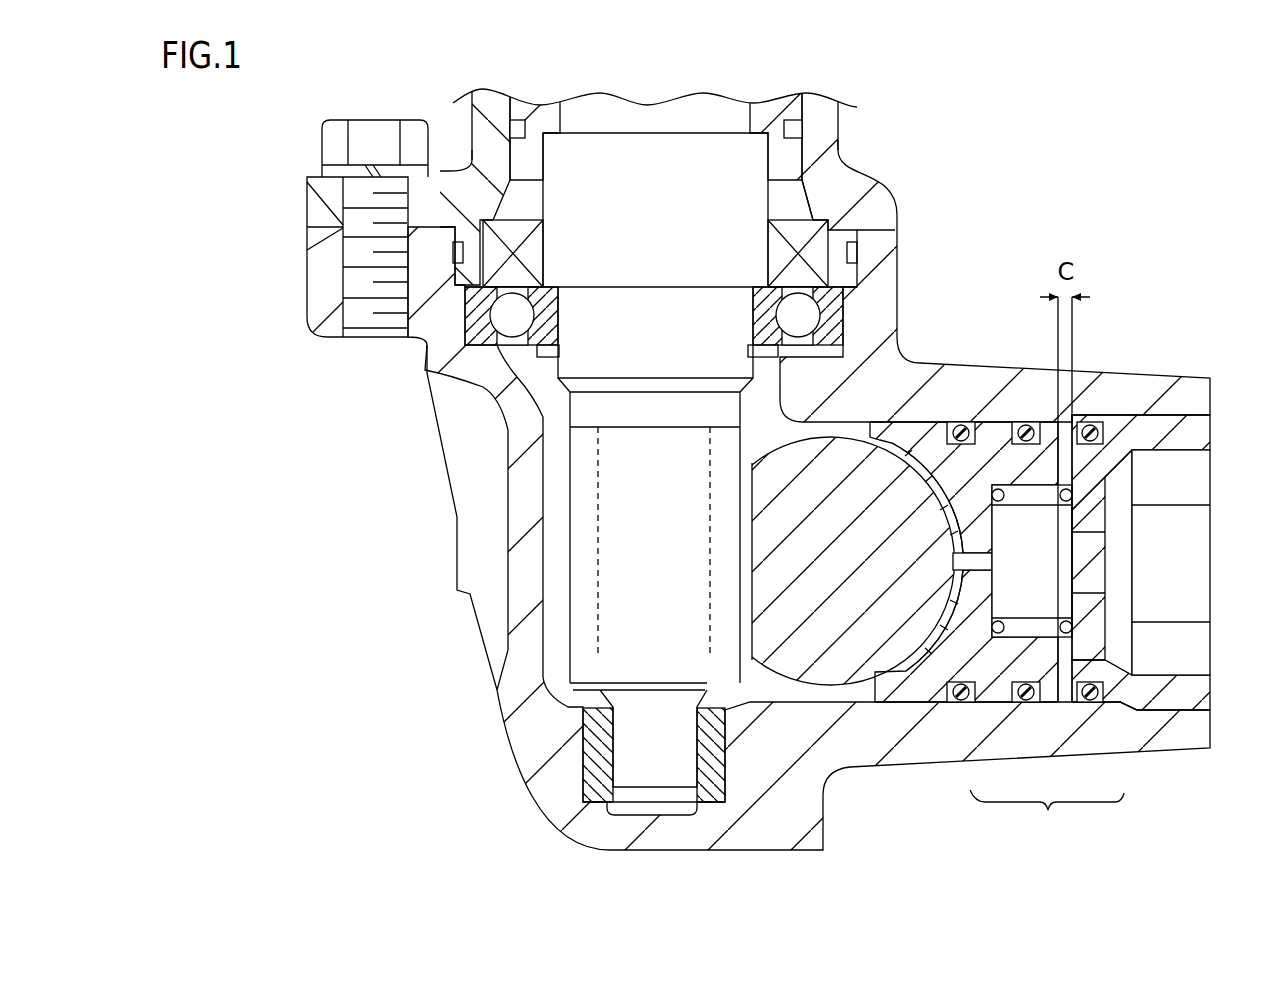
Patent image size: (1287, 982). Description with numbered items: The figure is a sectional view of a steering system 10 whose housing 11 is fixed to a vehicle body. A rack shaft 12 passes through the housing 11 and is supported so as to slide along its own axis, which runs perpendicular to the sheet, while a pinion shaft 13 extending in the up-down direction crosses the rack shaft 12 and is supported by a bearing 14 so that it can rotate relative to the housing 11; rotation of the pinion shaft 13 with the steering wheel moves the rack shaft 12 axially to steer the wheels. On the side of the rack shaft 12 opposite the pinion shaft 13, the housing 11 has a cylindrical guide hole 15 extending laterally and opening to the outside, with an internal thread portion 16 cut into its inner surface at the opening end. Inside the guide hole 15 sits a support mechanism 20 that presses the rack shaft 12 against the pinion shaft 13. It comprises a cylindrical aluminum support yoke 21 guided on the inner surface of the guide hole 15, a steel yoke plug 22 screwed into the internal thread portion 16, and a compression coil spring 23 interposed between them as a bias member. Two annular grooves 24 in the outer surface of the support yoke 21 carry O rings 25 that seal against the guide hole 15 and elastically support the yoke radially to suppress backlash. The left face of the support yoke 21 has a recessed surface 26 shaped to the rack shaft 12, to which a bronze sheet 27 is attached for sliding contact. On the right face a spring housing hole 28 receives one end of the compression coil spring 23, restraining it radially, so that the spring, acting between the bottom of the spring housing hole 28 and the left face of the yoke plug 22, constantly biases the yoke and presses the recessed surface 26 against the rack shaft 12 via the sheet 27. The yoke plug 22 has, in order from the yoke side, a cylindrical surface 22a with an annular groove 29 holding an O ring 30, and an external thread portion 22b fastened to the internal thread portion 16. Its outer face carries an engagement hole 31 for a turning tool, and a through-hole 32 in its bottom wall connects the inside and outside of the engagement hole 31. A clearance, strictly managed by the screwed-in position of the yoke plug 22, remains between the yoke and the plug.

The steering system 10 is at (1046, 184).
The housing 11 is at (808, 810).
The rack shaft 12 is at (815, 680).
The pinion shaft 13 is at (570, 645).
The bearing 14 is at (465, 345).
The guide hole 15 is at (930, 690).
The internal thread portion 16 is at (1187, 705).
The support mechanism 20 is at (1047, 819).
The support yoke 21 is at (993, 703).
The yoke plug 22 is at (1110, 703).
The cylindrical surface 22a is at (1120, 420).
The external thread portion 22b is at (1187, 415).
The compression coil spring 23 is at (1049, 703).
The annular groove 24 is at (1021, 420).
The O ring 25 is at (962, 420).
The recessed surface 26 is at (884, 430).
The sheet 27 is at (870, 662).
The spring housing hole 28 is at (1020, 572).
The annular groove 29 is at (1094, 420).
The O ring 30 is at (1070, 420).
The engagement hole 31 is at (1212, 448).
The through-hole 32 is at (1108, 537).